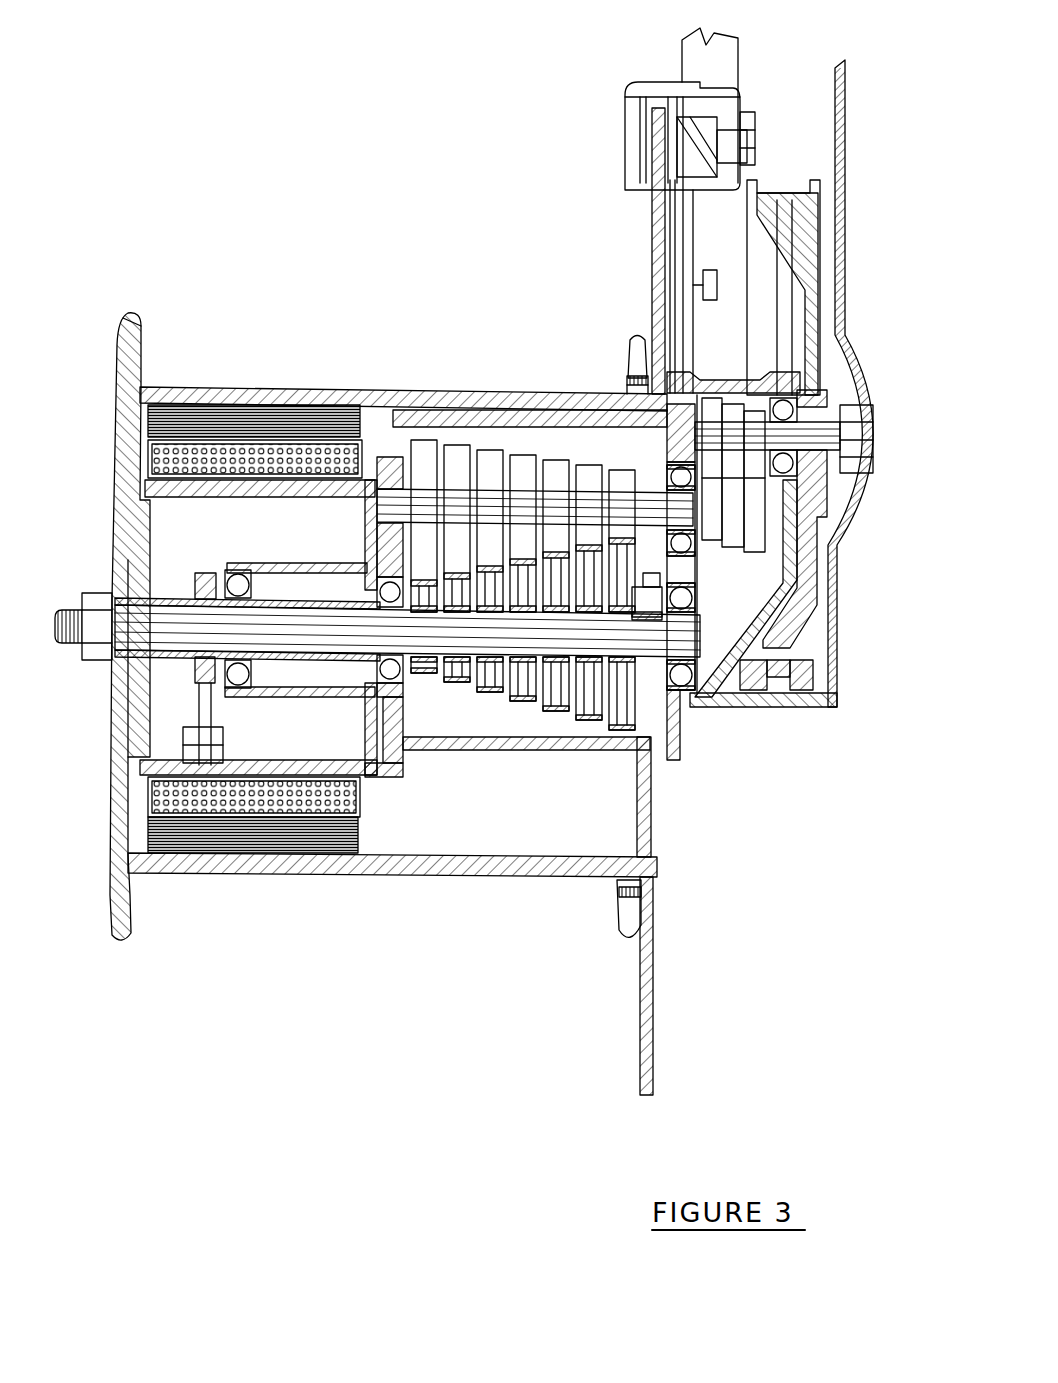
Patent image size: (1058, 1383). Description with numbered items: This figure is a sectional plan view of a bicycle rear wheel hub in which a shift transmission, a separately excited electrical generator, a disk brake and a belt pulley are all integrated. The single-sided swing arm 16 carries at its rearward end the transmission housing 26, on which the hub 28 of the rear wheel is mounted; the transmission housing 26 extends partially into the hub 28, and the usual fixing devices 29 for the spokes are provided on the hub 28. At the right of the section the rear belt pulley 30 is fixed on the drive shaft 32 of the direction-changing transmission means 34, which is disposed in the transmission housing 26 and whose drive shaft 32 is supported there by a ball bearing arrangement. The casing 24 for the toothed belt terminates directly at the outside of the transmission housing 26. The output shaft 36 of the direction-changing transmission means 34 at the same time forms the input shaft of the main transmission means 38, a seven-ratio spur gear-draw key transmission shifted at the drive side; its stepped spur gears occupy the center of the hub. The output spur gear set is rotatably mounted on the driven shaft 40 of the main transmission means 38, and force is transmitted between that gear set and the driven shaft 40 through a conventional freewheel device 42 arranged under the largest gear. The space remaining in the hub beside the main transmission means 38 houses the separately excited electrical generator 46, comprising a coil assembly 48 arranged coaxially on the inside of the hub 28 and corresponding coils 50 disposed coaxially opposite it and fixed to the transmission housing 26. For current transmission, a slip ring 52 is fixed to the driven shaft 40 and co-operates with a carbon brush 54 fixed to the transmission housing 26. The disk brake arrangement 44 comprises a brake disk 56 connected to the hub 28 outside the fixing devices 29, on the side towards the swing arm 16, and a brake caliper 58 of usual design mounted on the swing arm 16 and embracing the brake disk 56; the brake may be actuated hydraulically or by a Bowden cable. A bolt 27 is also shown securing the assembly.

The single-sided swing arm 16 is at (690, 62).
The casing 24 is at (850, 88).
The transmission housing 26 is at (688, 700).
The bolt 27 is at (638, 384).
The hub 28 is at (436, 386).
The fixing devices 29 is at (138, 316).
The belt pulley 30 is at (793, 693).
The drive shaft 32 is at (820, 445).
The direction-changing transmission means 34 is at (742, 483).
The output shaft 36 is at (590, 505).
The main transmission means 38 is at (653, 505).
The driven shaft 40 is at (668, 617).
The freewheel device 42 is at (690, 650).
The disk brake arrangement 44 is at (598, 130).
The separately excited electrical generator 46 is at (248, 440).
The coil assembly 48 is at (297, 410).
The coils 50 is at (150, 460).
The slip ring 52 is at (193, 673).
The carbon brush 54 is at (187, 735).
The brake disk 56 is at (657, 272).
The brake caliper 58 is at (640, 90).